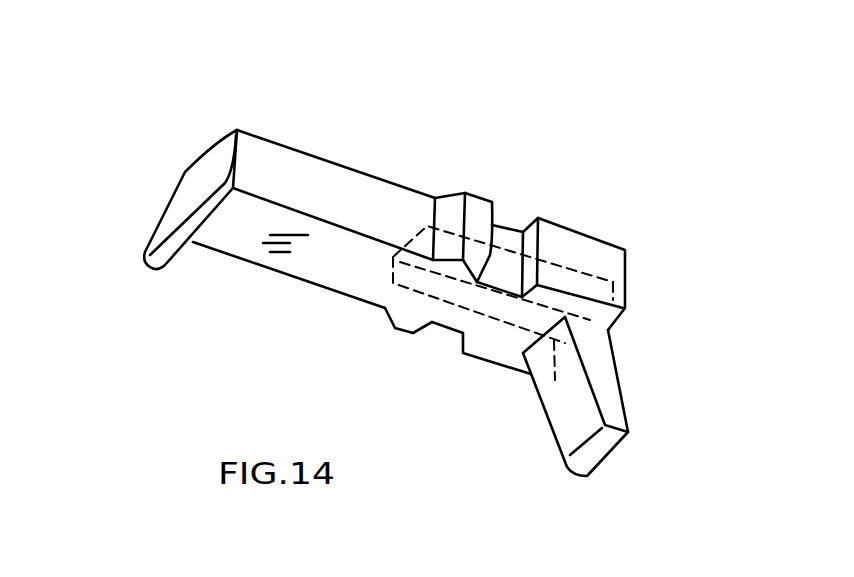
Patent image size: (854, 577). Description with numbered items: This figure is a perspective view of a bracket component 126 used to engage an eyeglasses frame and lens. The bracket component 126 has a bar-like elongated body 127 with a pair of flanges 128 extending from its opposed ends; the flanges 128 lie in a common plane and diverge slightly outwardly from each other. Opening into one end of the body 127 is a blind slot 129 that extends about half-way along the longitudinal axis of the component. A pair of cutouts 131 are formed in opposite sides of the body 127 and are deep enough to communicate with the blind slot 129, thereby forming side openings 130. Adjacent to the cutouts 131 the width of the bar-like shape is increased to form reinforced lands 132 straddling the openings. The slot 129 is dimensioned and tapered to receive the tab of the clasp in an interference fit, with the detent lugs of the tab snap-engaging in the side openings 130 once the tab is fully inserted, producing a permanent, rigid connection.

The bracket component 126 is at (272, 125).
The bar-like elongated body 127 is at (315, 197).
The flanges 128 is at (190, 220).
The blind slot 129 is at (387, 310).
The side openings 130 is at (503, 263).
The cutouts 131 is at (496, 283).
The reinforced lands 132 is at (527, 225).